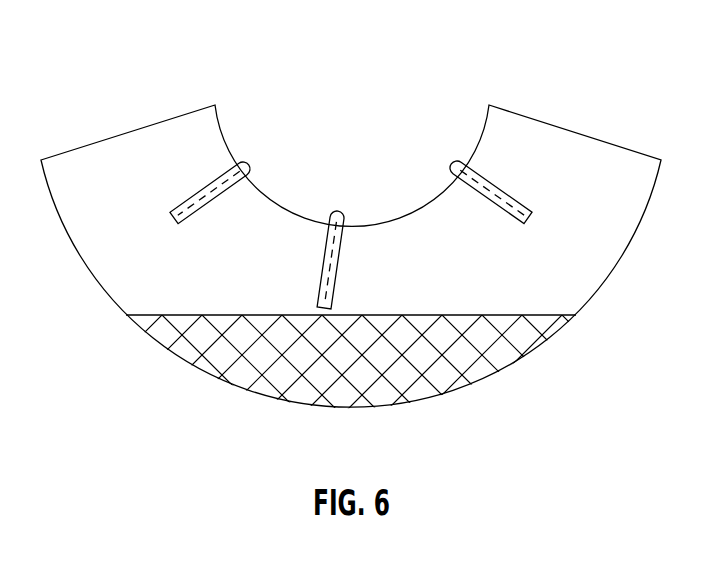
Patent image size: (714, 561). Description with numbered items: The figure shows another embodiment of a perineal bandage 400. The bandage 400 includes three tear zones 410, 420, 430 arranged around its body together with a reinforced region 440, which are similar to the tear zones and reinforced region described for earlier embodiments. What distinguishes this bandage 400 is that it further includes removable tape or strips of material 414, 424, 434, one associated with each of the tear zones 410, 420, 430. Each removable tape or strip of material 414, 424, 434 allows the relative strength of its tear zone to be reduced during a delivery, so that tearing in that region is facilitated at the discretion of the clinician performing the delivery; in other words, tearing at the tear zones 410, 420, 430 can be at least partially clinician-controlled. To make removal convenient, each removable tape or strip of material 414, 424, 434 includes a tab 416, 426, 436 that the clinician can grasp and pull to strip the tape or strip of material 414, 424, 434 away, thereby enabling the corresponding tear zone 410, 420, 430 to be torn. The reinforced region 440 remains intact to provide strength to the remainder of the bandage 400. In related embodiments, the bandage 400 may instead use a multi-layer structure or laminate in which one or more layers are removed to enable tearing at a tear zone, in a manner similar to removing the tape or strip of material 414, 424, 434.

The perineal bandage 400 is at (105, 73).
The tear zone 410 is at (197, 190).
The removable tape or strip of material 414 is at (213, 201).
The tab 416 is at (244, 161).
The tear zone 420 is at (505, 190).
The removable tape or strip of material 424 is at (507, 222).
The tab 426 is at (461, 161).
The tear zone 430 is at (328, 258).
The removable tape or strip of material 434 is at (341, 262).
The tab 436 is at (341, 210).
The reinforced region 440 is at (510, 357).